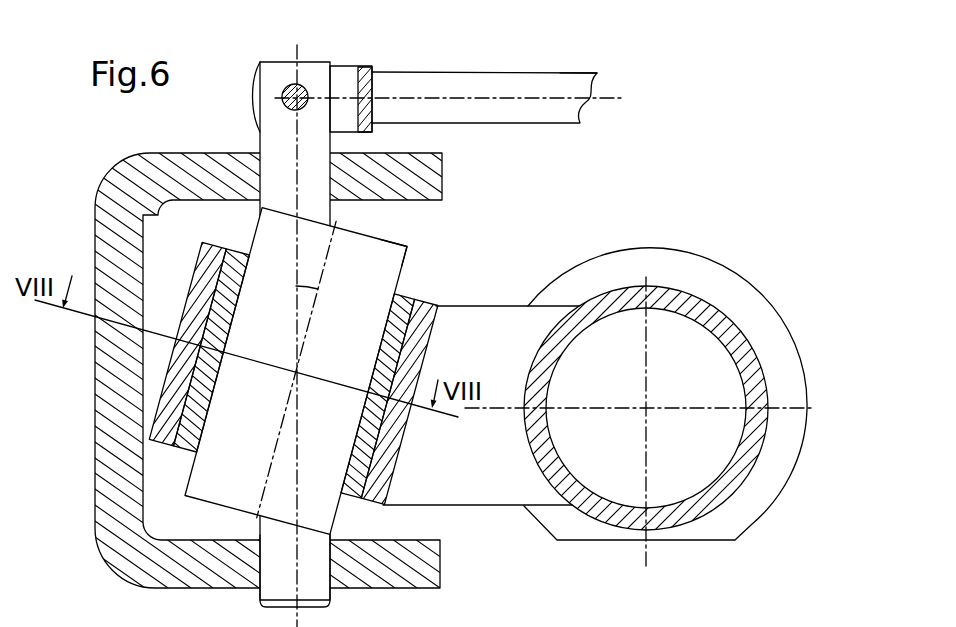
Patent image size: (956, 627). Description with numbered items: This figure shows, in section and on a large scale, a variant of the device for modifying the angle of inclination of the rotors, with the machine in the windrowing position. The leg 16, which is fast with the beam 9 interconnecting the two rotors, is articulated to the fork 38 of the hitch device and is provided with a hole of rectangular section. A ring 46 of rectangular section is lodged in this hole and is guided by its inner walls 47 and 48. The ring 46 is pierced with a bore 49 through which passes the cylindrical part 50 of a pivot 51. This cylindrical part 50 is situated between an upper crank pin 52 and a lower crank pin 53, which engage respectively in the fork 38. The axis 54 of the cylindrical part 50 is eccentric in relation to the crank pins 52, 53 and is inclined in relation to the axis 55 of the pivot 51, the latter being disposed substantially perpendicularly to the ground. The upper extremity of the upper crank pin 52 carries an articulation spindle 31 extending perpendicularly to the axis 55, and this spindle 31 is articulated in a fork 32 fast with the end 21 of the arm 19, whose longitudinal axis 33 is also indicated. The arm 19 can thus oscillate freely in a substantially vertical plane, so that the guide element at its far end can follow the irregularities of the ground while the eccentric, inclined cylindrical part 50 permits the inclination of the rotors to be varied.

The beam 9 is at (738, 328).
The leg 16 is at (463, 497).
The arm 19 is at (570, 67).
The end of the arm 21 is at (455, 80).
The articulation spindle 31 is at (288, 84).
The fork 32 is at (348, 70).
The axis of the arm 33 is at (508, 98).
The fork 38 is at (107, 237).
The ring 46 is at (207, 340).
The inner wall 47 is at (200, 424).
The inner wall 48 is at (352, 455).
The bore 49 is at (403, 343).
The cylindrical part 50 is at (382, 270).
The pivot 51 is at (418, 241).
The upper crank pin 52 is at (268, 147).
The lower crank pin 53 is at (268, 535).
The axis of the cylindrical part 54 is at (282, 428).
The axis of the pivot 55 is at (317, 313).